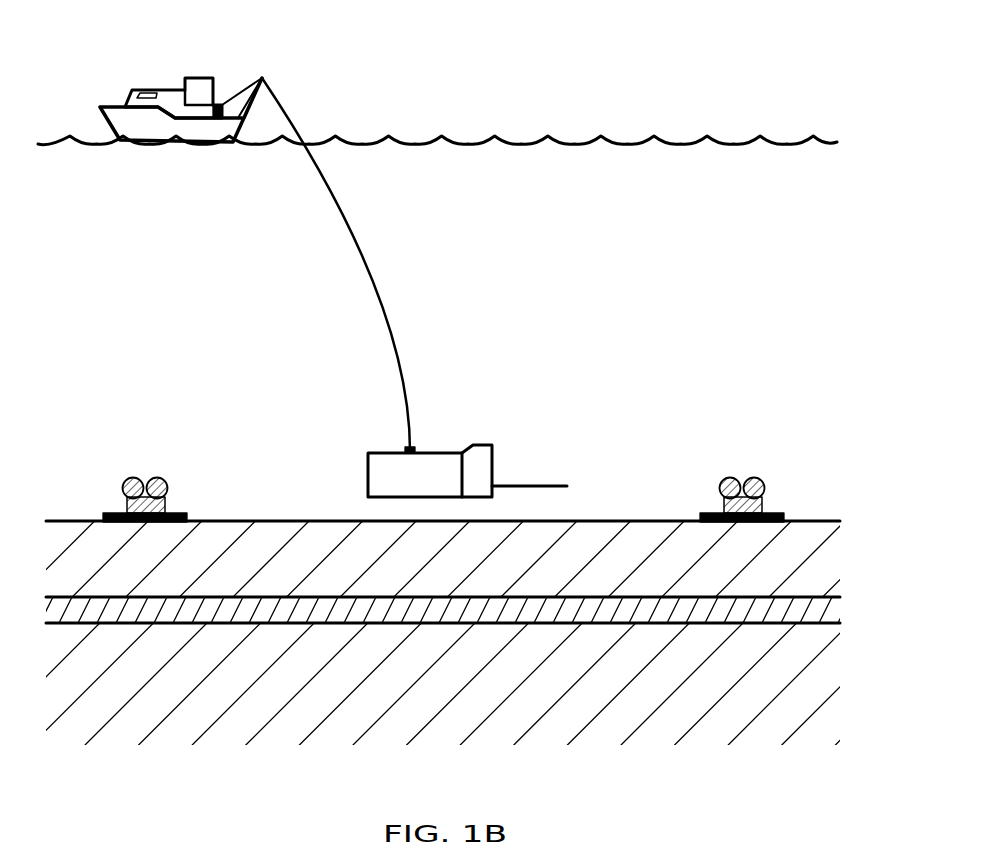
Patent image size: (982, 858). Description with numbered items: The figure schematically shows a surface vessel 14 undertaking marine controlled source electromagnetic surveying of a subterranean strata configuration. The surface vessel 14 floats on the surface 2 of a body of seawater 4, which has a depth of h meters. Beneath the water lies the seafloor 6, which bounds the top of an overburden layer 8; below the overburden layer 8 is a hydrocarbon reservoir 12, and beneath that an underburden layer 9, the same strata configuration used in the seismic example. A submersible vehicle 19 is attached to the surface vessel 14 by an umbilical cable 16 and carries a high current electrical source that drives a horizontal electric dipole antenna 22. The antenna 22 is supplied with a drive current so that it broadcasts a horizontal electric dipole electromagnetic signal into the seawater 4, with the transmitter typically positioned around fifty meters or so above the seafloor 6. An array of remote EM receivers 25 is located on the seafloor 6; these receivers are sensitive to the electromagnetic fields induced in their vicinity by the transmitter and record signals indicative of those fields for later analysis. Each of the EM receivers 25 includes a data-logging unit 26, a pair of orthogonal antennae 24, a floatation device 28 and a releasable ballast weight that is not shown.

The surface 2 is at (507, 140).
The seawater 4 is at (173, 319).
The seafloor 6 is at (332, 520).
The overburden layer 8 is at (823, 565).
The underburden layer 9 is at (828, 678).
The hydrocarbon reservoir 12 is at (835, 617).
The surface vessel 14 is at (198, 78).
The umbilical cable 16 is at (377, 293).
The submersible vehicle 19 is at (437, 452).
The horizontal electric dipole antenna 22 is at (543, 482).
The orthogonal antennae 24 is at (112, 513).
The remote EM receivers 25 is at (447, 464).
The data-logging unit 26 is at (180, 512).
The floatation device 28 is at (155, 480).